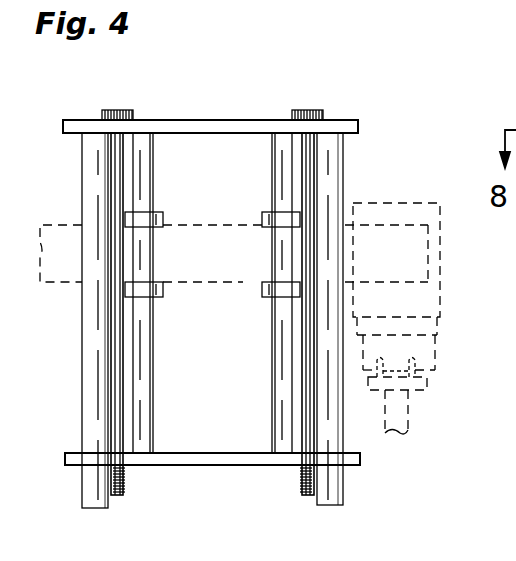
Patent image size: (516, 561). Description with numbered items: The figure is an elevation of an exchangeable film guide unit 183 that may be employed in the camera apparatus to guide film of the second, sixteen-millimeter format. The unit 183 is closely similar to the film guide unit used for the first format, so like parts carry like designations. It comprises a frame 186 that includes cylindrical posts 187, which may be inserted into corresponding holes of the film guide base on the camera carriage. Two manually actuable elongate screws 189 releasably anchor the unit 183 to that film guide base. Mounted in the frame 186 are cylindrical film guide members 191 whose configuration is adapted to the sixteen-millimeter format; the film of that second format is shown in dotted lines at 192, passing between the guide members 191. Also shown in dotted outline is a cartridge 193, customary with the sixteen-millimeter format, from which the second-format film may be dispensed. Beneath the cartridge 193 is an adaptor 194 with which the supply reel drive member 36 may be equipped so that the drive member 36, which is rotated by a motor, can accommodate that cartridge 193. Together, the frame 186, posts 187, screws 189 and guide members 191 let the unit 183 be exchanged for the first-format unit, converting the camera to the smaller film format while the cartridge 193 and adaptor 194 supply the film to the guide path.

The film guide unit 183 is at (243, 92).
The frame 186 is at (76, 121).
The cylindrical posts 187 is at (336, 163).
The manually actuable elongate screws 189 is at (118, 108).
The cylindrical film guide members 191 is at (272, 173).
The second format film 192 is at (243, 283).
The cartridge 193 is at (440, 258).
The adaptor 194 is at (437, 350).
The supply reel drive member 36 is at (430, 388).